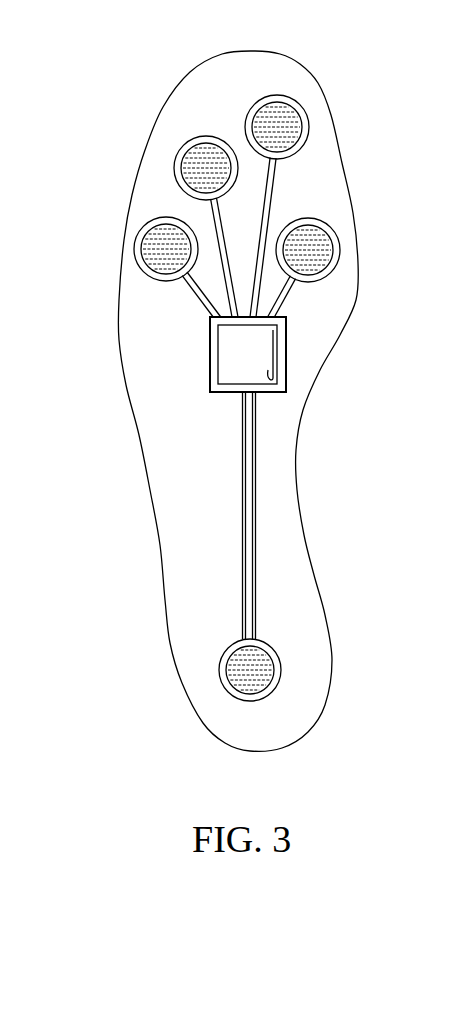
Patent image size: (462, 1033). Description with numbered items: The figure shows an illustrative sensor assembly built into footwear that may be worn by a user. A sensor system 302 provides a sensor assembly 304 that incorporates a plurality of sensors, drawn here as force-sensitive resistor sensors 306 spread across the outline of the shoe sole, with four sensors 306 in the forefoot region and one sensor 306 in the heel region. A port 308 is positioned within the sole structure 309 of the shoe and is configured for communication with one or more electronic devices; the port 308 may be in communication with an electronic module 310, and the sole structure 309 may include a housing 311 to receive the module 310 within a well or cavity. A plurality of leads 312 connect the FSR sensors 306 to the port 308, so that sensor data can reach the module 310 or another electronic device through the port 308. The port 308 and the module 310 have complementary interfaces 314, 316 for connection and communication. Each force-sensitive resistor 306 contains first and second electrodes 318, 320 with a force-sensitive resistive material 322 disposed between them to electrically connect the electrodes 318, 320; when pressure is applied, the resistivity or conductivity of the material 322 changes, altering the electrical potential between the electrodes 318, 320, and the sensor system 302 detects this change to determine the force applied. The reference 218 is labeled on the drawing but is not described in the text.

The insole outline 218 is at (258, 100).
The sensor system 302 is at (206, 387).
The sensor assembly 304 is at (264, 527).
The force-sensitive resistor sensor 306 is at (189, 138).
The port 308 is at (208, 360).
The sole structure 309 is at (165, 598).
The electronic module 310 is at (258, 368).
The housing 311 is at (210, 343).
The lead 312 is at (275, 198).
The interface 314 is at (288, 350).
The interface 316 is at (278, 380).
The first electrode 318 is at (228, 686).
The second electrode 320 is at (291, 98).
The force-sensitive resistive material 322 is at (309, 128).